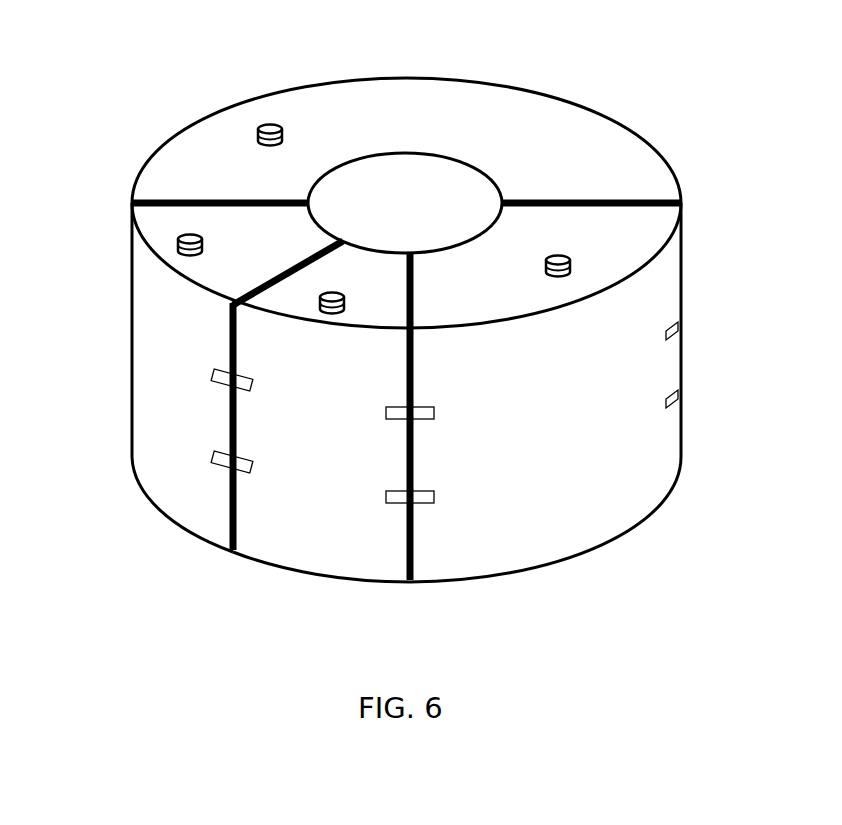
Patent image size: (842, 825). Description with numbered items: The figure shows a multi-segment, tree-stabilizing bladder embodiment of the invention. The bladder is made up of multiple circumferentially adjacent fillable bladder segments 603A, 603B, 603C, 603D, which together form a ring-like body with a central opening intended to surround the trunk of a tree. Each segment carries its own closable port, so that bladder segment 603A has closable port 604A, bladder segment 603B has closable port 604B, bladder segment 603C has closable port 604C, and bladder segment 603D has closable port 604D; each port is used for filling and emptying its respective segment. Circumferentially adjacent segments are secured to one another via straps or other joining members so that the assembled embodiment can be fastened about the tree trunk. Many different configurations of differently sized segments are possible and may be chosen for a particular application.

The fillable bladder segment 603A is at (337, 110).
The fillable bladder segment 603B is at (578, 401).
The fillable bladder segment 603C is at (318, 513).
The fillable bladder segment 603D is at (168, 344).
The closable port 604A is at (252, 133).
The closable port 604B is at (577, 266).
The closable port 604C is at (331, 318).
The closable port 604D is at (174, 249).